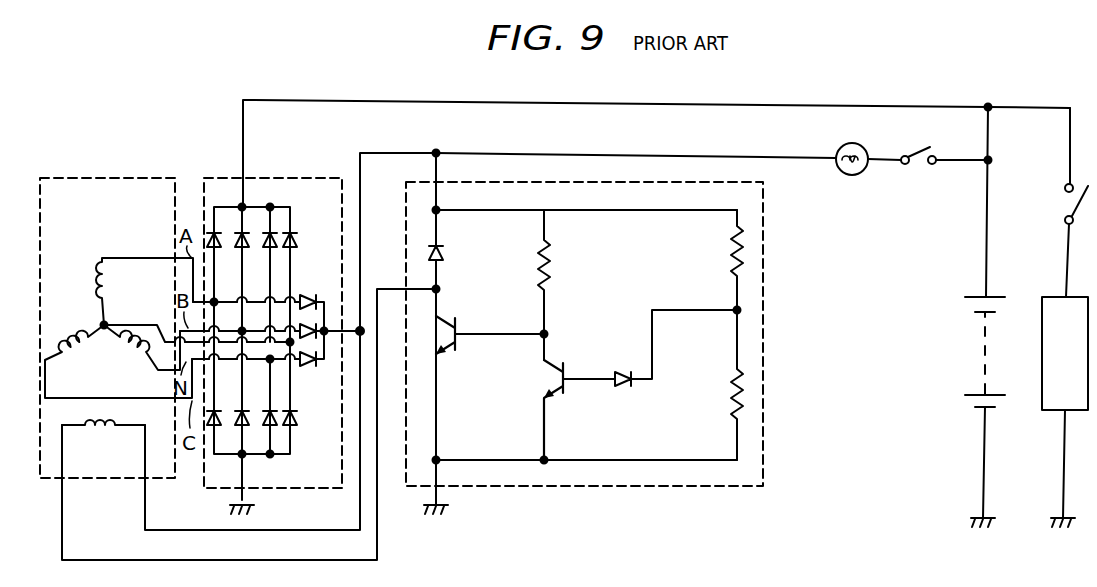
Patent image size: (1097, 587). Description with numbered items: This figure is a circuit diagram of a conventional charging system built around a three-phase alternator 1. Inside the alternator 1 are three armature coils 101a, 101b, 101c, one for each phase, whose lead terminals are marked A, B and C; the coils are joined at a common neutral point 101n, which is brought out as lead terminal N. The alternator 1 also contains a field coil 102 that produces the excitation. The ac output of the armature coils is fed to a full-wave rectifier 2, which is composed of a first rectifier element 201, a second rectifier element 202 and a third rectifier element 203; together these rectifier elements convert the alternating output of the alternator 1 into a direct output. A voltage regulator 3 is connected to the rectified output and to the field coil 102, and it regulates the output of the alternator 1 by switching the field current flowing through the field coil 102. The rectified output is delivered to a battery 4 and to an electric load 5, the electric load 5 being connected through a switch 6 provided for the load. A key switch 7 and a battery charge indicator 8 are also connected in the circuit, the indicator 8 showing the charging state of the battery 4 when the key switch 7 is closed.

The three-phase alternator 1 is at (137, 176).
The full-wave rectifier 2 is at (298, 176).
The voltage regulator 3 is at (644, 512).
The battery 4 is at (977, 345).
The electric load 5 is at (1079, 297).
The switch for the load 6 is at (1062, 206).
The key switch 7 is at (918, 165).
The battery charge indicator 8 is at (853, 176).
The armature coil 101a is at (112, 283).
The armature coil 101b is at (132, 358).
The armature coil 101c is at (77, 356).
The common neutral point 101n is at (100, 323).
The field coil 102 is at (100, 432).
The first rectifier element 201 is at (257, 212).
The second rectifier element 202 is at (256, 444).
The third rectifier element 203 is at (322, 346).